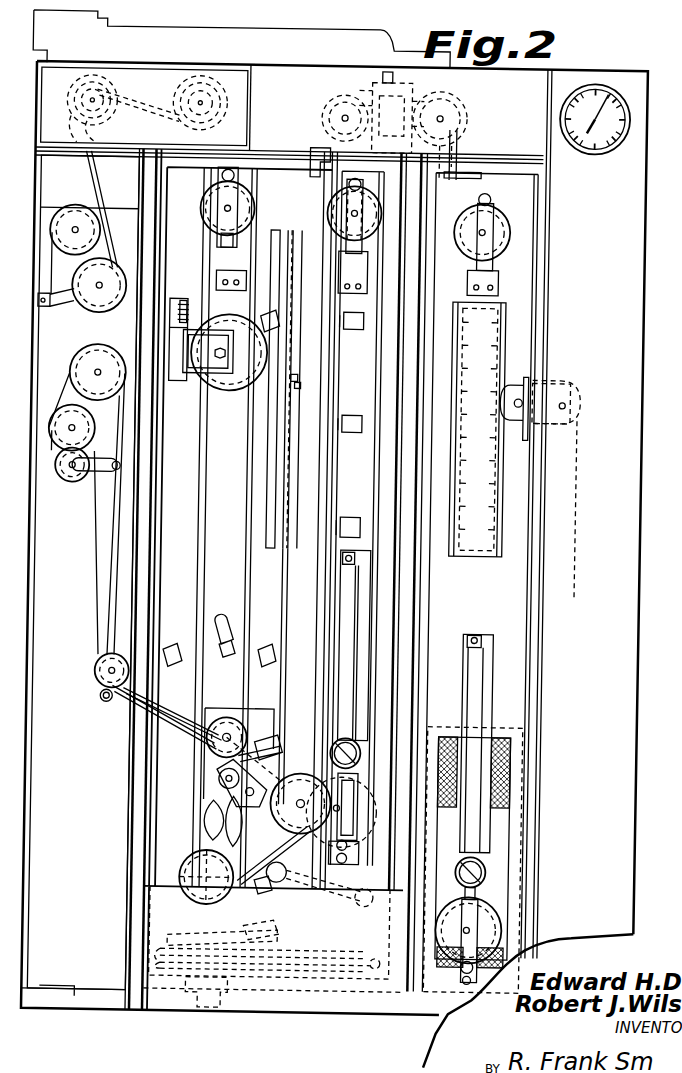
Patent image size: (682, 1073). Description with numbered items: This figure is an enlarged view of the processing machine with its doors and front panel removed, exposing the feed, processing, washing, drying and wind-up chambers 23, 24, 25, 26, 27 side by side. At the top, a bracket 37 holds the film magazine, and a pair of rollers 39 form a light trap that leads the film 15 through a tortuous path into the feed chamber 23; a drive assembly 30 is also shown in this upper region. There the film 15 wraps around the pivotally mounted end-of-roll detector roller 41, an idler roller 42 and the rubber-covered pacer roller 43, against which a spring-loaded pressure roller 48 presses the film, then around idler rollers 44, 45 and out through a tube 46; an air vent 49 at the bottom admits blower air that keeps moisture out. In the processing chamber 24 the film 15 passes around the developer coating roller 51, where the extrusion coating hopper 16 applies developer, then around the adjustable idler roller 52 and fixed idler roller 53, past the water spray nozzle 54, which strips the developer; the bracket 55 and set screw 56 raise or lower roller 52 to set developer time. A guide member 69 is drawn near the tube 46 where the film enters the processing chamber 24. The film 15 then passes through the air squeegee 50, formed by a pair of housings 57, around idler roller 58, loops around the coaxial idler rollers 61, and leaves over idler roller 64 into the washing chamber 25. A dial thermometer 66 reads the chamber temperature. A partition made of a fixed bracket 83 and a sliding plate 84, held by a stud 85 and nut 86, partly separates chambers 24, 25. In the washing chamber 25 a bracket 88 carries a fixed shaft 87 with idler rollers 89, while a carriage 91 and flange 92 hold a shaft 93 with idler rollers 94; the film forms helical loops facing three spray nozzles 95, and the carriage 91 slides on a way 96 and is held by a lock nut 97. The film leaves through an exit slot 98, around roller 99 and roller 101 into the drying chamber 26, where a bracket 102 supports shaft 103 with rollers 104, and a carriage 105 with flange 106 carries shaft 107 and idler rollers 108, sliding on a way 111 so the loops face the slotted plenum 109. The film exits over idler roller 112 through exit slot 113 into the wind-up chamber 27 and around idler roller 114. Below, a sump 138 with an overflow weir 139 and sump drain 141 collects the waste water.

The film 15 is at (113, 527).
The extrusion coating hopper 16 is at (286, 740).
The feed chamber 23 is at (85, 578).
The processing chamber 24 is at (279, 581).
The washing chamber 25 is at (365, 521).
The drying chamber 26 is at (472, 574).
The wind-up chamber 27 is at (595, 511).
The drive mechanism 30 is at (383, 70).
The bracket 37 is at (146, 93).
The rollers 39 is at (116, 89).
The end-of-roll detector roller 41 is at (103, 296).
The idler roller 42 is at (82, 205).
The pacer roller 43 is at (56, 445).
The idler roller 44 is at (103, 344).
The idler roller 45 is at (123, 651).
The tube 46 is at (176, 713).
The pressure roller 48 is at (80, 480).
The air vent 49 is at (84, 983).
The air squeegee 50 is at (222, 812).
The developer coating roller 51 is at (239, 712).
The adjustable idler roller 52 is at (230, 378).
The fixed idler roller 53 is at (236, 895).
The water spray nozzle 54 is at (293, 878).
The bracket 55 is at (184, 378).
The set screw 56 is at (187, 298).
The housings 57 is at (224, 833).
The idler roller 58 is at (236, 767).
The idler rollers 61 is at (212, 198).
The idler roller 64 is at (312, 826).
The dial thermometer 66 is at (596, 148).
The belt 69 is at (210, 705).
The fixed bracket 83 is at (298, 540).
The plate 84 is at (294, 577).
The stud 85 is at (305, 384).
The nut 86 is at (304, 368).
The fixed shaft 87 is at (355, 207).
The bracket 88 is at (353, 272).
The idler rollers 89 is at (330, 210).
The carriage 91 is at (370, 780).
The flange 92 is at (365, 826).
The shaft 93 is at (360, 806).
The idler rollers 94 is at (360, 852).
The spray nozzles 95 is at (356, 408).
The way 96 is at (353, 630).
The lock nut 97 is at (373, 746).
The exit slot 98 is at (316, 146).
The roller 99 is at (328, 96).
The roller 101 is at (466, 102).
The bracket 102 is at (500, 280).
The shaft 103 is at (487, 225).
The rollers 104 is at (499, 241).
The carriage 105 is at (496, 889).
The flange 106 is at (495, 937).
The shaft 107 is at (484, 923).
The idler rollers 108 is at (494, 892).
The slotted plenum 109 is at (502, 456).
The way 111 is at (500, 663).
The idler roller 112 is at (511, 388).
The exit slot 113 is at (540, 373).
The idler roller 114 is at (587, 383).
The sump 138 is at (295, 981).
The overflow weir 139 is at (223, 939).
The sump drain 141 is at (228, 1003).